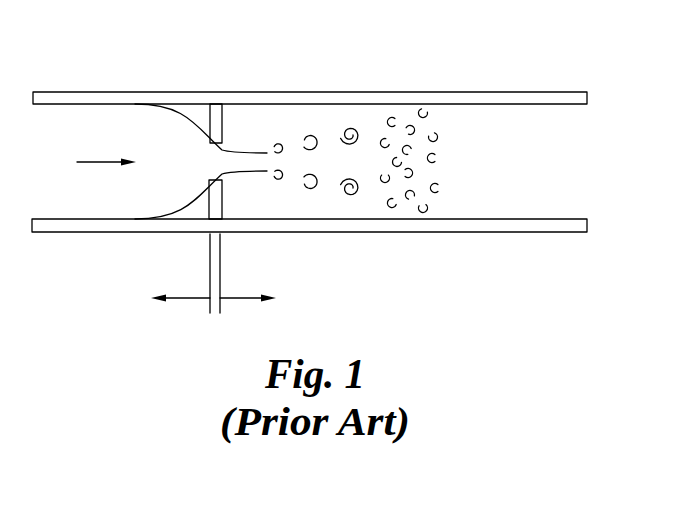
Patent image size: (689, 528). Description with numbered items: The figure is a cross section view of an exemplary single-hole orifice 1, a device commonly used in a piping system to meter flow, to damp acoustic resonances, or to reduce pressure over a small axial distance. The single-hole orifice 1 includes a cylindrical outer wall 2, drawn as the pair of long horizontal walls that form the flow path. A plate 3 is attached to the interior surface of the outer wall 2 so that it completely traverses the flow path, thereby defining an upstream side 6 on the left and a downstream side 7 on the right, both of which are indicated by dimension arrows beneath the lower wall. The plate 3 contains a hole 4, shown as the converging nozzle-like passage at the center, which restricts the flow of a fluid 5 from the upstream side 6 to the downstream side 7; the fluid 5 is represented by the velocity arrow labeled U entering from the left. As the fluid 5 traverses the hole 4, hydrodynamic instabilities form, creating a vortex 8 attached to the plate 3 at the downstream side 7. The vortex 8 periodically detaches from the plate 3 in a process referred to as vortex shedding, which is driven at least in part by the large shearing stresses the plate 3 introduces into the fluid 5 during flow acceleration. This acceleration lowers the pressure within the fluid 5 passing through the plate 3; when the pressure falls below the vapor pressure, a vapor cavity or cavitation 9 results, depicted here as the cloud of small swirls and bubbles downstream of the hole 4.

The single-hole orifice 1 is at (309, 133).
The cylindrical outer wall 2 is at (154, 92).
The plate 3 is at (217, 125).
The hole 4 is at (222, 165).
The fluid 5 is at (93, 188).
The upstream side 6 is at (180, 285).
The downstream side 7 is at (248, 285).
The vortex 8 is at (282, 133).
The cavitation 9 is at (405, 190).